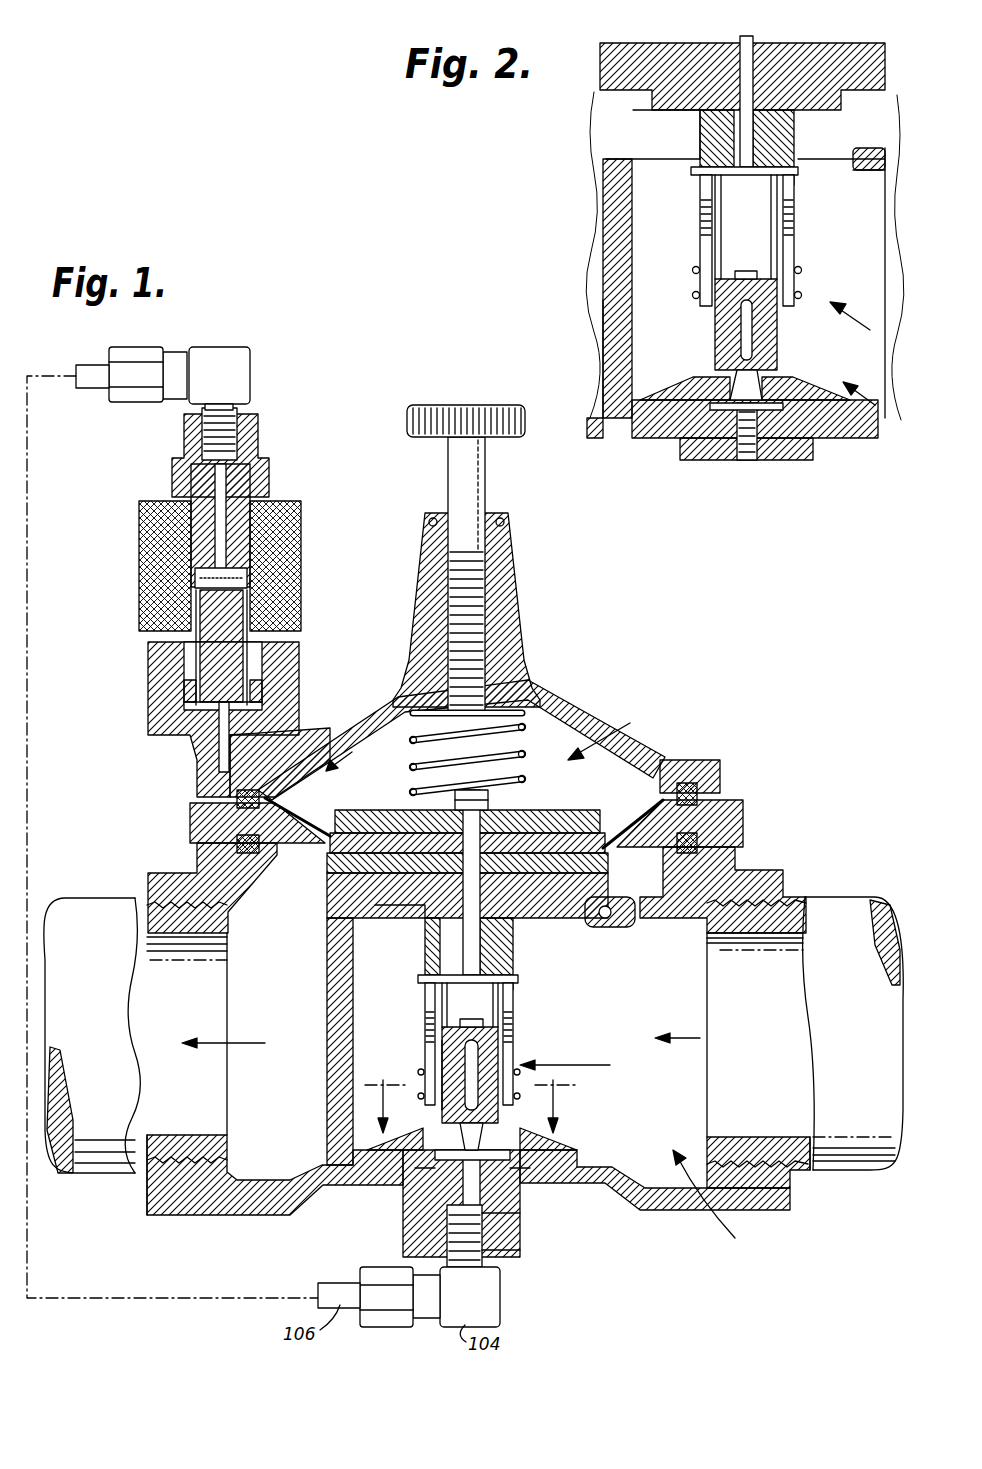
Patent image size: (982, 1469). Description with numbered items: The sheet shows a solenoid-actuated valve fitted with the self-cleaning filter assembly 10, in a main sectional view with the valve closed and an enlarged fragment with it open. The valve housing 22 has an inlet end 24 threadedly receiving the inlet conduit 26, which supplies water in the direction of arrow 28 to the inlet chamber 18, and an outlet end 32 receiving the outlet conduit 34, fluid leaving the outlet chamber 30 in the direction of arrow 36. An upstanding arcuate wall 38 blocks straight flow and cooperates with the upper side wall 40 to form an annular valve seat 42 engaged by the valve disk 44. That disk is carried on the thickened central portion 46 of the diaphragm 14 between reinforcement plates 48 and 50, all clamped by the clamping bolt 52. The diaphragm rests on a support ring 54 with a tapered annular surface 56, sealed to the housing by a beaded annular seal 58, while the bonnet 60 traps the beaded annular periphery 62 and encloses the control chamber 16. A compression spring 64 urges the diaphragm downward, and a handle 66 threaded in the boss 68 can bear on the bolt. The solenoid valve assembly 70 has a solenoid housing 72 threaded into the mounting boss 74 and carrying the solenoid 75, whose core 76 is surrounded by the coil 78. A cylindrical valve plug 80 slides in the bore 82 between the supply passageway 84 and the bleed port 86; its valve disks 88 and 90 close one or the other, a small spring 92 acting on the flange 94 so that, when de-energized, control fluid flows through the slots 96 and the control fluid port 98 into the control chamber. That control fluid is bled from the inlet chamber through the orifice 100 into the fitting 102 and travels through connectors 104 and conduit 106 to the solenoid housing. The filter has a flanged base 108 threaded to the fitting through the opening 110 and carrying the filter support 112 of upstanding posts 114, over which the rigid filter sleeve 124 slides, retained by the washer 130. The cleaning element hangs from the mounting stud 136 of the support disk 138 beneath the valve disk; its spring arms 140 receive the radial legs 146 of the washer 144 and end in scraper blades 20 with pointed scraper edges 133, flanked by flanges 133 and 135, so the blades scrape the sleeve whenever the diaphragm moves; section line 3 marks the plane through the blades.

In FIG. 1, the section line 3 is at (470, 1089).
In FIG. 1, the self-cleaning filter assembly 10 is at (579, 1064).
In FIG. 2, the self-cleaning filter assembly 10 is at (813, 351).
In FIG. 1, the diaphragm 14 is at (285, 810).
In FIG. 1, the control chamber 16 is at (630, 723).
In FIG. 1, the inlet chamber 18 is at (715, 1203).
In FIG. 2, the inlet chamber 18 is at (872, 399).
In FIG. 1, the scraper blades 20 is at (418, 1172).
In FIG. 1, the valve housing 22 is at (648, 1210).
In FIG. 2, the valve housing 22 is at (858, 440).
In FIG. 1, the inlet end 24 is at (770, 1195).
In FIG. 1, the inlet conduit 26 is at (822, 905).
In FIG. 1, the arrow 28 is at (700, 1038).
In FIG. 1, the outlet chamber 30 is at (292, 1160).
In FIG. 2, the outlet chamber 30 is at (605, 215).
In FIG. 1, the outlet end 32 is at (185, 1210).
In FIG. 1, the outlet conduit 34 is at (110, 1165).
In FIG. 1, the arrow 36 is at (252, 1046).
In FIG. 1, the upstanding arcuate wall 38 is at (326, 1000).
In FIG. 2, the upstanding arcuate wall 38 is at (615, 352).
In FIG. 1, the upper side wall 40 is at (620, 928).
In FIG. 2, the upper side wall 40 is at (885, 160).
In FIG. 1, the annular valve seat 42 is at (636, 912).
In FIG. 2, the annular valve seat 42 is at (870, 172).
In FIG. 1, the valve disk 44 is at (345, 890).
In FIG. 2, the valve disk 44 is at (830, 56).
In FIG. 1, the thickened central portion 46 is at (395, 835).
In FIG. 1, the upper reinforcement plate 48 is at (583, 830).
In FIG. 1, the lower reinforcement plate 50 is at (326, 860).
In FIG. 1, the clamping bolt 52 is at (483, 822).
In FIG. 2, the clamping bolt 52 is at (748, 42).
In FIG. 1, the annular support ring 54 is at (748, 822).
In FIG. 1, the tapered annular surface 56 is at (680, 760).
In FIG. 1, the beaded annular seal 58 is at (742, 860).
In FIG. 1, the valve bonnet 60 is at (590, 722).
In FIG. 1, the beaded annular periphery 62 is at (698, 795).
In FIG. 1, the compression spring 64 is at (520, 700).
In FIG. 1, the manually operated handle 66 is at (468, 495).
In FIG. 1, the boss 68 is at (505, 610).
In FIG. 1, the solenoid valve assembly 70 is at (334, 448).
In FIG. 1, the solenoid housing 72 is at (258, 445).
In FIG. 1, the mounting boss 74 is at (300, 675).
In FIG. 1, the solenoid 75 is at (205, 566).
In FIG. 1, the solenoid core 76 is at (240, 530).
In FIG. 1, the electrical coil 78 is at (280, 555).
In FIG. 1, the cylindrical valve plug 80 is at (215, 650).
In FIG. 1, the bore 82 is at (247, 585).
In FIG. 1, the control fluid supply passageway 84 is at (230, 488).
In FIG. 1, the control fluid bleed port 86 is at (216, 762).
In FIG. 1, the valve disk 88 is at (198, 600).
In FIG. 1, the valve disk 90 is at (190, 706).
In FIG. 1, the small compression spring 92 is at (184, 690).
In FIG. 1, the flange 94 is at (262, 694).
In FIG. 1, the slots 96 is at (250, 650).
In FIG. 1, the control fluid port 98 is at (352, 756).
In FIG. 1, the control fluid orifice 100 is at (510, 1243).
In FIG. 2, the control fluid orifice 100 is at (740, 462).
In FIG. 1, the fitting 102 is at (492, 1262).
In FIG. 2, the fitting 102 is at (770, 462).
In FIG. 1, the connectors 104 is at (225, 368).
In FIG. 1, the conduit 106 is at (90, 382).
In FIG. 1, the flanged base 108 is at (575, 1150).
In FIG. 2, the flanged base 108 is at (745, 388).
In FIG. 1, the opening 110 is at (512, 1165).
In FIG. 1, the upstanding filter support 112 is at (480, 1075).
In FIG. 1, the upstanding posts 114 is at (478, 1050).
In FIG. 1, the filter sleeve 124 is at (442, 1080).
In FIG. 1, the washer 130 is at (442, 1035).
In FIG. 2, the scraper edge 133 is at (712, 283).
In FIG. 2, the lower flange 135 is at (715, 306).
In FIG. 1, the mounting stud 136 is at (505, 945).
In FIG. 2, the mounting stud 136 is at (775, 138).
In FIG. 1, the support disk 138 is at (385, 912).
In FIG. 2, the support disk 138 is at (665, 112).
In FIG. 1, the spring arms 140 is at (425, 992).
In FIG. 2, the spring arms 140 is at (700, 240).
In FIG. 1, the washer 144 is at (428, 975).
In FIG. 2, the washer 144 is at (700, 176).
In FIG. 1, the radial legs 146 is at (516, 982).
In FIG. 2, the radial legs 146 is at (796, 180).